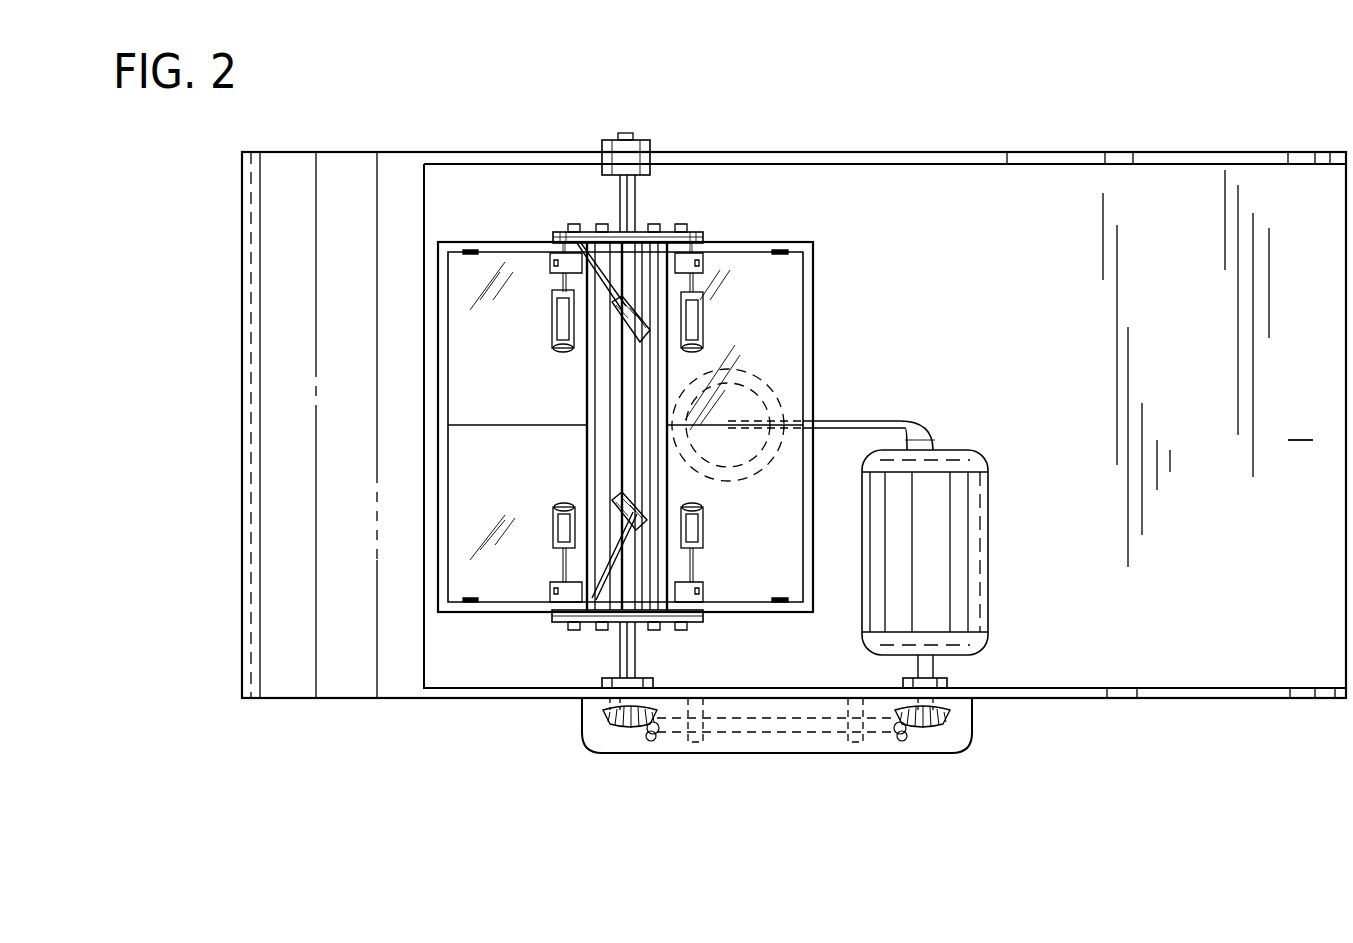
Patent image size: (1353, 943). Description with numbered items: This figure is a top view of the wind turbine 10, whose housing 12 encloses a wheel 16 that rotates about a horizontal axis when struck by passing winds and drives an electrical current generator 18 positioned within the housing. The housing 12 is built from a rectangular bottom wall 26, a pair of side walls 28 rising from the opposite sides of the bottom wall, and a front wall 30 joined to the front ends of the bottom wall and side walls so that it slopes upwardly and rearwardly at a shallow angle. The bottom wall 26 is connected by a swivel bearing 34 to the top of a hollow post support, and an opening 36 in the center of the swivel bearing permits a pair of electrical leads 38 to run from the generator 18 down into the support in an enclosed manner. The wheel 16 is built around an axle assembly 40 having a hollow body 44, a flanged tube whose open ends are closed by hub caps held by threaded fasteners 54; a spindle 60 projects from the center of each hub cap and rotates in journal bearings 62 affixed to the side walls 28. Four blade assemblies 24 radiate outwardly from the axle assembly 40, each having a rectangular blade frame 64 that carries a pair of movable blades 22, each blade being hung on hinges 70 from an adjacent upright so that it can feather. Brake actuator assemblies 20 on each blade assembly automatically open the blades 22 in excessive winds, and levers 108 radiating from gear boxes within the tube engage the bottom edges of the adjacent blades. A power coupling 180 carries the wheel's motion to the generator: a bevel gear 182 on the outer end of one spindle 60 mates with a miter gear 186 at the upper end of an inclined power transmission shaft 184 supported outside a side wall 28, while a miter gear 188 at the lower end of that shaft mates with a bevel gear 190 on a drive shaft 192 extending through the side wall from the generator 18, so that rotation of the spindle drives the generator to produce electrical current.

The wind turbine 10 is at (350, 90).
The housing 12 is at (990, 150).
The wheel 16 is at (512, 242).
The electrical current generator 18 is at (970, 528).
The brake actuator assemblies 20 is at (567, 210).
The blades 22 is at (795, 292).
The blade assemblies 24 is at (815, 338).
The bottom wall 26 is at (1300, 425).
The side walls 28 is at (1245, 152).
The front wall 30 is at (258, 380).
The swivel bearing 34 is at (790, 398).
The opening 36 is at (763, 470).
The electrical leads 38 is at (933, 432).
The axle assembly 40 is at (590, 465).
The hollow body 44 is at (700, 485).
The threaded fasteners 54 is at (680, 626).
The spindle 60 is at (624, 130).
The journal bearings 62 is at (650, 145).
The blade frame 64 is at (455, 242).
The hinges 70 is at (700, 250).
The levers 108 is at (563, 270).
The power coupling 180 is at (743, 762).
The bevel gear 182 is at (609, 742).
The power transmission shaft 184 is at (773, 740).
The miter gear 186 is at (652, 742).
The miter gear 188 is at (897, 738).
The bevel gear 190 is at (955, 745).
The drive shaft 192 is at (938, 667).